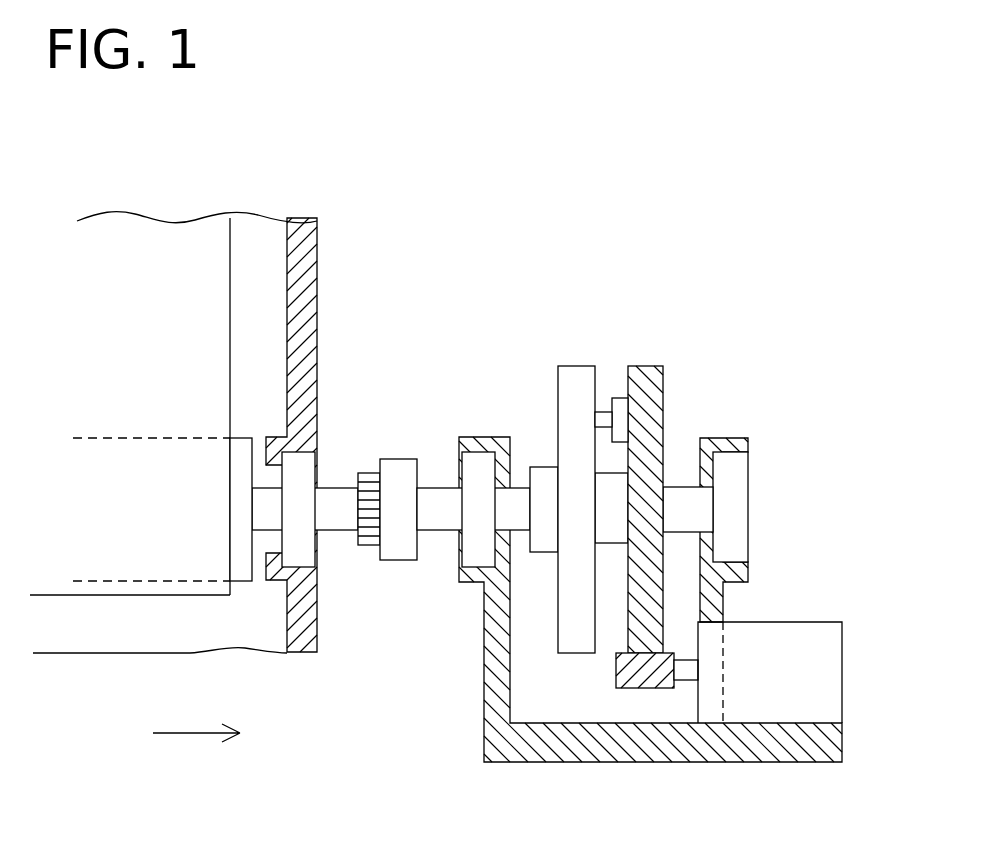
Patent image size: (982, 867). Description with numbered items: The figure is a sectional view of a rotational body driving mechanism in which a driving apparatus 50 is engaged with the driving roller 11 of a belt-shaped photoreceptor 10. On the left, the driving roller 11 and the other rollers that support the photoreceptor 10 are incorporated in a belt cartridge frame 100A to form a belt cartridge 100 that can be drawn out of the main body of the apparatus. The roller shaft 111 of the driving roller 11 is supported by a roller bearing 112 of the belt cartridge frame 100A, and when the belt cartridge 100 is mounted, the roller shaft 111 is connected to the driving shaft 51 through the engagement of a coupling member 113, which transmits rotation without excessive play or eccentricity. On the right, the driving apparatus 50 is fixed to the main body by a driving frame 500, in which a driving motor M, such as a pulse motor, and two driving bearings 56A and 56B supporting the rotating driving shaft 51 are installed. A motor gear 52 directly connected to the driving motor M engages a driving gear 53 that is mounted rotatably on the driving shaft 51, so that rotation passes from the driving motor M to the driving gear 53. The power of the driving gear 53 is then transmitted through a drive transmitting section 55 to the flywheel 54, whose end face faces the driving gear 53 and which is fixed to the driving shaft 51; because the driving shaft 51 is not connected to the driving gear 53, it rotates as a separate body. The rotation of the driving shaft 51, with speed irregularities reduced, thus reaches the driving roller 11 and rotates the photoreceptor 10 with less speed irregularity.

The belt-shaped photoreceptor 10 is at (212, 270).
The belt cartridge frame 100A is at (293, 307).
The belt cartridge 100 is at (98, 668).
The driving roller 11 is at (240, 577).
The roller shaft 111 is at (340, 493).
The roller bearing 112 is at (308, 550).
The coupling member 113 is at (405, 449).
The driving apparatus 50 is at (637, 533).
The driving frame 500 is at (492, 733).
The driving shaft 51 is at (432, 523).
The motor gear 52 is at (643, 683).
The driving gear 53 is at (655, 380).
The flywheel 54 is at (575, 372).
The drive transmitting section 55 is at (625, 377).
The driving bearing 56A is at (738, 467).
The driving bearing 56B is at (477, 463).
The driving motor M is at (828, 663).